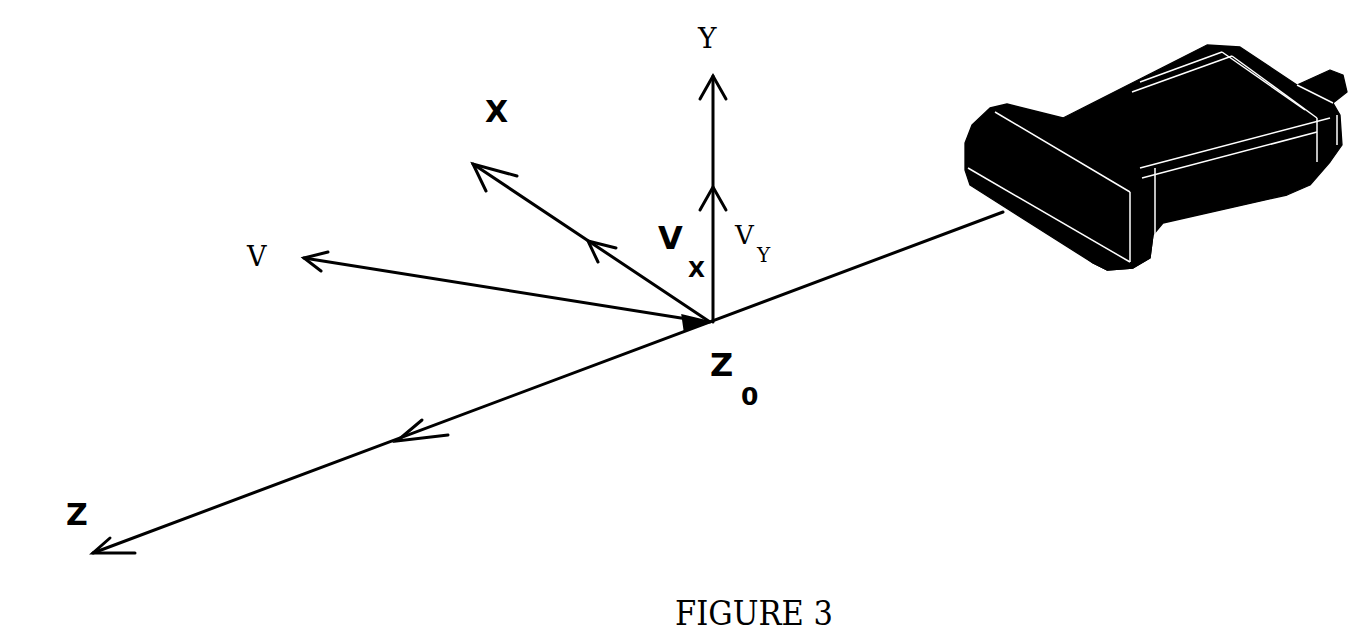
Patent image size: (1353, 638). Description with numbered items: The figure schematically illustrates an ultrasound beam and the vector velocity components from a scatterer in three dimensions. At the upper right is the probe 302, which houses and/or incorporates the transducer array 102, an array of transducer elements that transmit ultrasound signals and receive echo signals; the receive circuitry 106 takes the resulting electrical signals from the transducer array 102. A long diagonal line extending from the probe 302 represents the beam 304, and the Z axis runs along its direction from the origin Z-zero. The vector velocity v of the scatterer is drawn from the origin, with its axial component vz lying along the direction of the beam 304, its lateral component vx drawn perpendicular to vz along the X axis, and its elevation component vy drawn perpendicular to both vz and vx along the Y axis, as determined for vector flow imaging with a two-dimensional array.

The transducer array 102 is at (1047, 242).
The probe 302 is at (1012, 102).
The beam 304 is at (877, 262).
The receive circuitry 106 is at (395, 526).